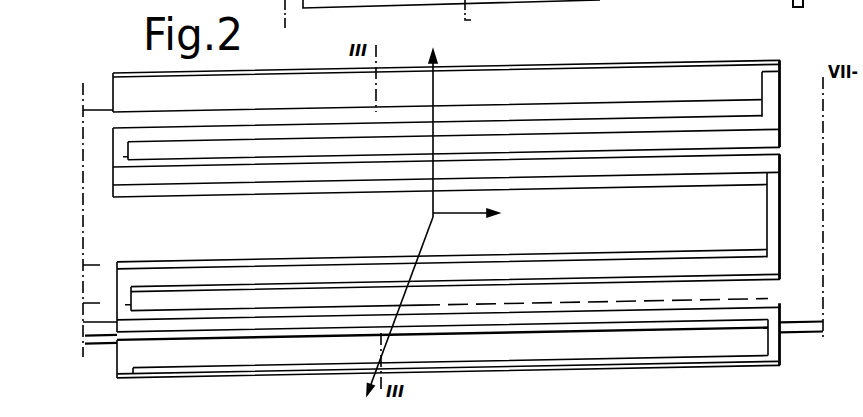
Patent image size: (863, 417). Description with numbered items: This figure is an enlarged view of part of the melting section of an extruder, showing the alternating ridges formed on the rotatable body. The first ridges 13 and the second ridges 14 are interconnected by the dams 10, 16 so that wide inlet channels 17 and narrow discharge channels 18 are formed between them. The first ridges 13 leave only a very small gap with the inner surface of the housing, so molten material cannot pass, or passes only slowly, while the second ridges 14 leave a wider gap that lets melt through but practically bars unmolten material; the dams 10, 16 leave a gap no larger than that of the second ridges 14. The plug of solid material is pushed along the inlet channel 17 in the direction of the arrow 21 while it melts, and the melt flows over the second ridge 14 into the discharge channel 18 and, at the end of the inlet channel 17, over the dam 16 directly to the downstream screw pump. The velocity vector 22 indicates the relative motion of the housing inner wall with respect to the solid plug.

The dam 10 is at (128, 152).
The first ridge 13 is at (551, 78).
The second ridge 14 is at (623, 125).
The dam 16 is at (780, 223).
The inlet channel 17 is at (123, 222).
The discharge channel 18 is at (308, 158).
The arrow 21 is at (464, 146).
The velocity vector 22 is at (405, 298).